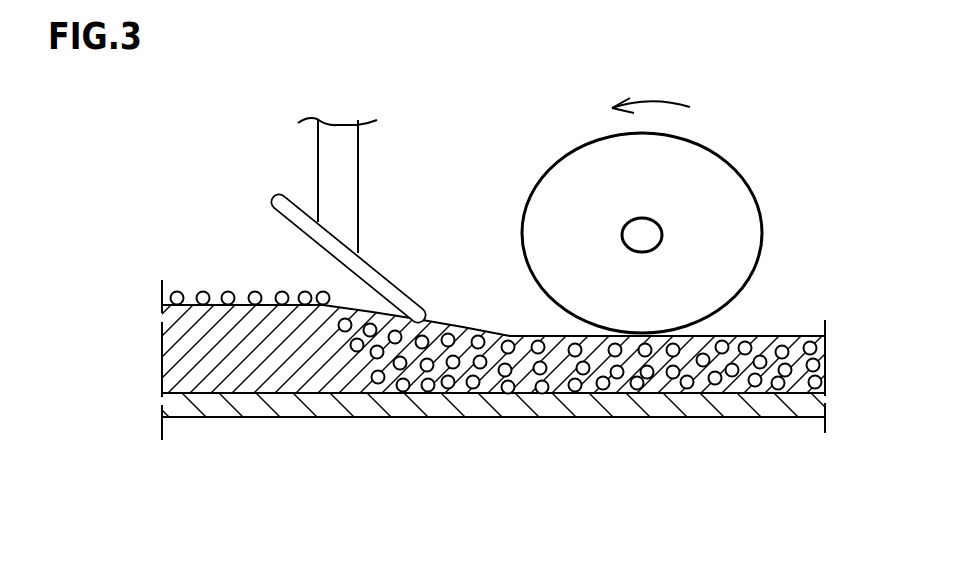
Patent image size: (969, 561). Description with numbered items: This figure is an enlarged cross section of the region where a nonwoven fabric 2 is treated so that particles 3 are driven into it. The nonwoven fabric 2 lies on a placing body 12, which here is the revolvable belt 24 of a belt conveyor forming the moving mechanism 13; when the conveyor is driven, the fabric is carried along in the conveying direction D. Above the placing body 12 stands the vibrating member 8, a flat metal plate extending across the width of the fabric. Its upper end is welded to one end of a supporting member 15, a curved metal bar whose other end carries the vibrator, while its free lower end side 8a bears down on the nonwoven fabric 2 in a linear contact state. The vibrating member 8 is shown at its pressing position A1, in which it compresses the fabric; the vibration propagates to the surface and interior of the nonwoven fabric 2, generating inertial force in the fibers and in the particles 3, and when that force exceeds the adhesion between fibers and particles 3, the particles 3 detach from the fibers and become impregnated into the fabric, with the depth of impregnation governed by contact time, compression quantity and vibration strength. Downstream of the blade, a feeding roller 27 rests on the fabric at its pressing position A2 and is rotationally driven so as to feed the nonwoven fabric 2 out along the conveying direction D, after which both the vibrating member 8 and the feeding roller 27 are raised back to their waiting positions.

The nonwoven fabric 2 is at (170, 343).
The particles 3 is at (228, 292).
The vibrating member 8 is at (290, 224).
The free end side of the vibrating member 8a is at (428, 318).
The placing body 12 is at (203, 419).
The moving mechanism 13 is at (340, 423).
The supporting member 15 is at (358, 148).
The belt 24 is at (252, 419).
The feeding roller 27 is at (737, 172).
The pressing position of the vibrating member A1 is at (398, 272).
The pressing position of the feeding roller A2 is at (515, 195).
The conveying direction D is at (558, 483).